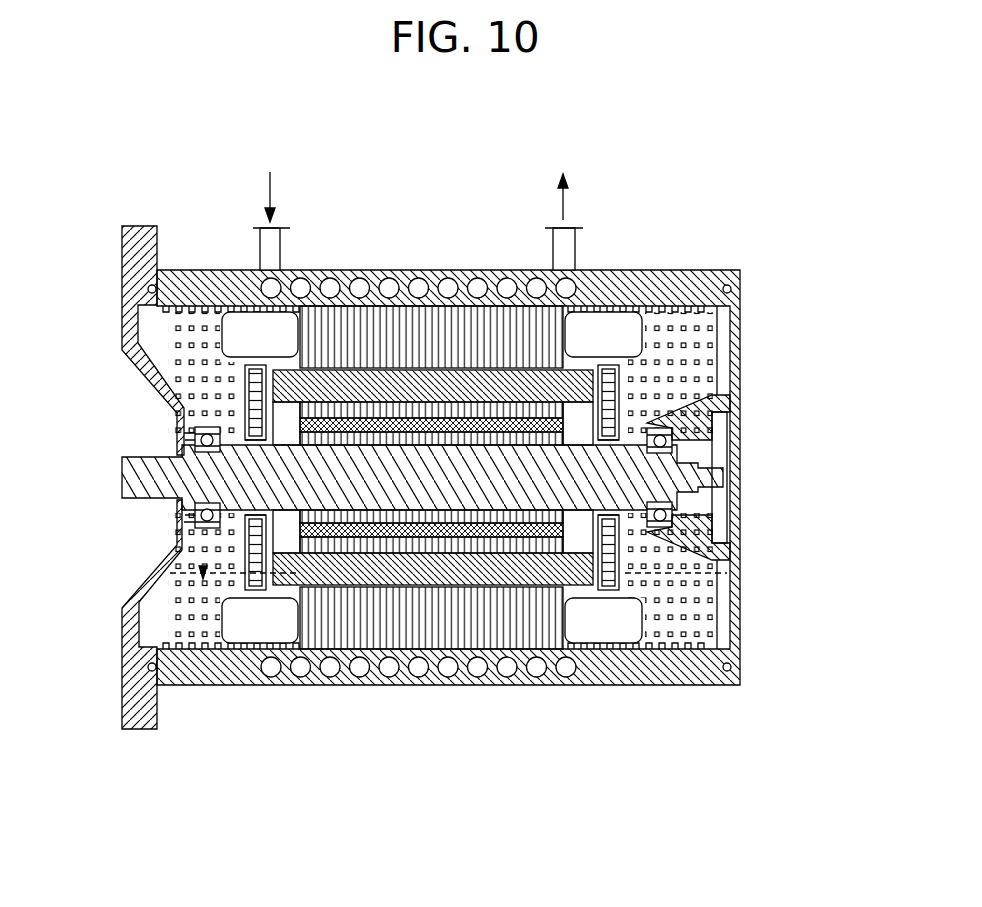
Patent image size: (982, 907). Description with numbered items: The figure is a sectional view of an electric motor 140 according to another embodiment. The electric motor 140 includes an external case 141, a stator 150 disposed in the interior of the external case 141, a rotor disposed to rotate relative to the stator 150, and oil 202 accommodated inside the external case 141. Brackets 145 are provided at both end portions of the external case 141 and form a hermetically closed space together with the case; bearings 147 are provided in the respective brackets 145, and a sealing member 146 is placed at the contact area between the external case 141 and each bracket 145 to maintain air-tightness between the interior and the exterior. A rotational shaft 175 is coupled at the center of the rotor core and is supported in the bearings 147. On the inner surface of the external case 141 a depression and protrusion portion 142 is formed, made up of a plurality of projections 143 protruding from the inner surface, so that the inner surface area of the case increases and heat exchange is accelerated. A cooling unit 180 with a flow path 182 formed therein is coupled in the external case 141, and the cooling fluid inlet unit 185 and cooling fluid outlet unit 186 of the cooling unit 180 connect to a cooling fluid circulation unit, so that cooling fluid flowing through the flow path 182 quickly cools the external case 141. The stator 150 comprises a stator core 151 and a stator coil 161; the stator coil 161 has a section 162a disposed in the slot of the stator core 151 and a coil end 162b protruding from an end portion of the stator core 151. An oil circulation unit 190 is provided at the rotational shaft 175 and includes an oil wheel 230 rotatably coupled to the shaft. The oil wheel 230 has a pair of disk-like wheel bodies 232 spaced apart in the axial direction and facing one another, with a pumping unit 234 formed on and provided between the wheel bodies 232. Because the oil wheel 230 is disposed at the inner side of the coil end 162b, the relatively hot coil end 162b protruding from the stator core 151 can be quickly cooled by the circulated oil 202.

The electric motor 140 is at (177, 168).
The external case 141 is at (671, 270).
The depression and protrusion portion 142 is at (515, 477).
The projections 143 is at (705, 349).
The brackets 145 is at (133, 253).
The sealing member 146 is at (148, 289).
The bearings 147 is at (195, 441).
The stator 150 is at (432, 566).
The stator core 151 is at (373, 686).
The stator coil 161 is at (432, 549).
The section 162a is at (330, 632).
The coil end 162b is at (268, 632).
The rotational shaft 175 is at (133, 480).
The cooling unit 180 is at (418, 407).
The flow path 182 is at (389, 286).
The cooling fluid inlet unit 185 is at (283, 246).
The cooling fluid outlet unit 186 is at (577, 246).
The oil circulation unit 190 is at (466, 597).
The oil 202 is at (154, 623).
The oil wheel 230 is at (466, 576).
The wheel body 232 is at (600, 592).
The pumping unit 234 is at (609, 592).